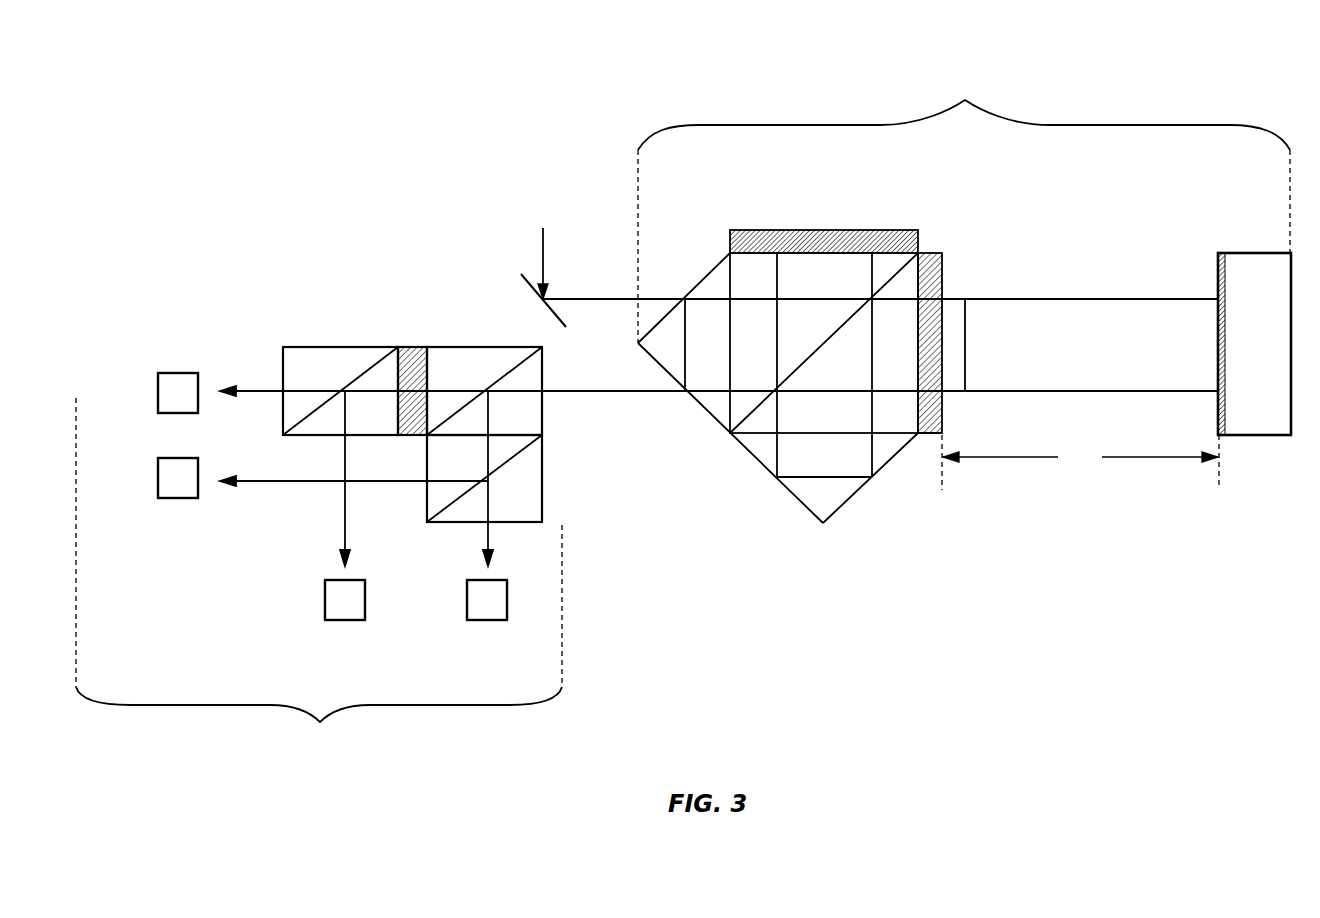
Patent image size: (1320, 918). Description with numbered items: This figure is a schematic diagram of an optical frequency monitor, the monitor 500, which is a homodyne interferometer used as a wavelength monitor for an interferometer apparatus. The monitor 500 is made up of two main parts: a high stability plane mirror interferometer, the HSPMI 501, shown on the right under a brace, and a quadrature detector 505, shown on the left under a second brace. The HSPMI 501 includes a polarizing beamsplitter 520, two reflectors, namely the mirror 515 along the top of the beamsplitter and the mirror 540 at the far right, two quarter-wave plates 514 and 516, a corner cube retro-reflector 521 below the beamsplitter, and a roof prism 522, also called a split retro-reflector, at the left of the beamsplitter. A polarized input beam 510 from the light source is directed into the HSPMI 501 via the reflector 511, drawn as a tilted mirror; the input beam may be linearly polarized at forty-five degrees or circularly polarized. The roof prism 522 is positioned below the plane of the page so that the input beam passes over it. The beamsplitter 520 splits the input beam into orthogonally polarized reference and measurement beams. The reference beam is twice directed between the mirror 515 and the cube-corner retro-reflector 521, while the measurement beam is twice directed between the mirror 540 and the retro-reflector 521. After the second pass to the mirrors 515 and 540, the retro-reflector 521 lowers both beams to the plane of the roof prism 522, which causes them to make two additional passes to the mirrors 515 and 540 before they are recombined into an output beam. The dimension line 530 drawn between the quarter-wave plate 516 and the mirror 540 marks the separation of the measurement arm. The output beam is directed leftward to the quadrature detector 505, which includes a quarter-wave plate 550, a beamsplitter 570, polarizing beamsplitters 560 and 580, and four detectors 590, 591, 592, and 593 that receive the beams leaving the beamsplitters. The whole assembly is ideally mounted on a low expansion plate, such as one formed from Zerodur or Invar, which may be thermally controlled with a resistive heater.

The monitor 500 is at (232, 77).
The high stability plane mirror interferometer 501 is at (964, 206).
The quadrature detector 505 is at (319, 577).
The polarized input beam 510 is at (577, 252).
The reflector 511 is at (511, 267).
The quarter-wave plate 514 is at (951, 317).
The reflector 515 is at (824, 219).
The quarter-wave plate 516 is at (957, 474).
The polarizing beamsplitter 520 is at (803, 365).
The corner cube retro-reflector 521 is at (882, 486).
The roof prism 522 is at (730, 388).
The separation distance 530 is at (1081, 461).
The reflector 540 is at (1239, 322).
The quarter-wave plate 550 is at (385, 368).
The polarizing beamsplitter 560 is at (337, 368).
The beamsplitter 570 is at (484, 368).
The polarizing beamsplitter 580 is at (519, 480).
The detector 590 is at (153, 417).
The detector 591 is at (153, 502).
The detector 592 is at (320, 624).
The detector 593 is at (462, 624).